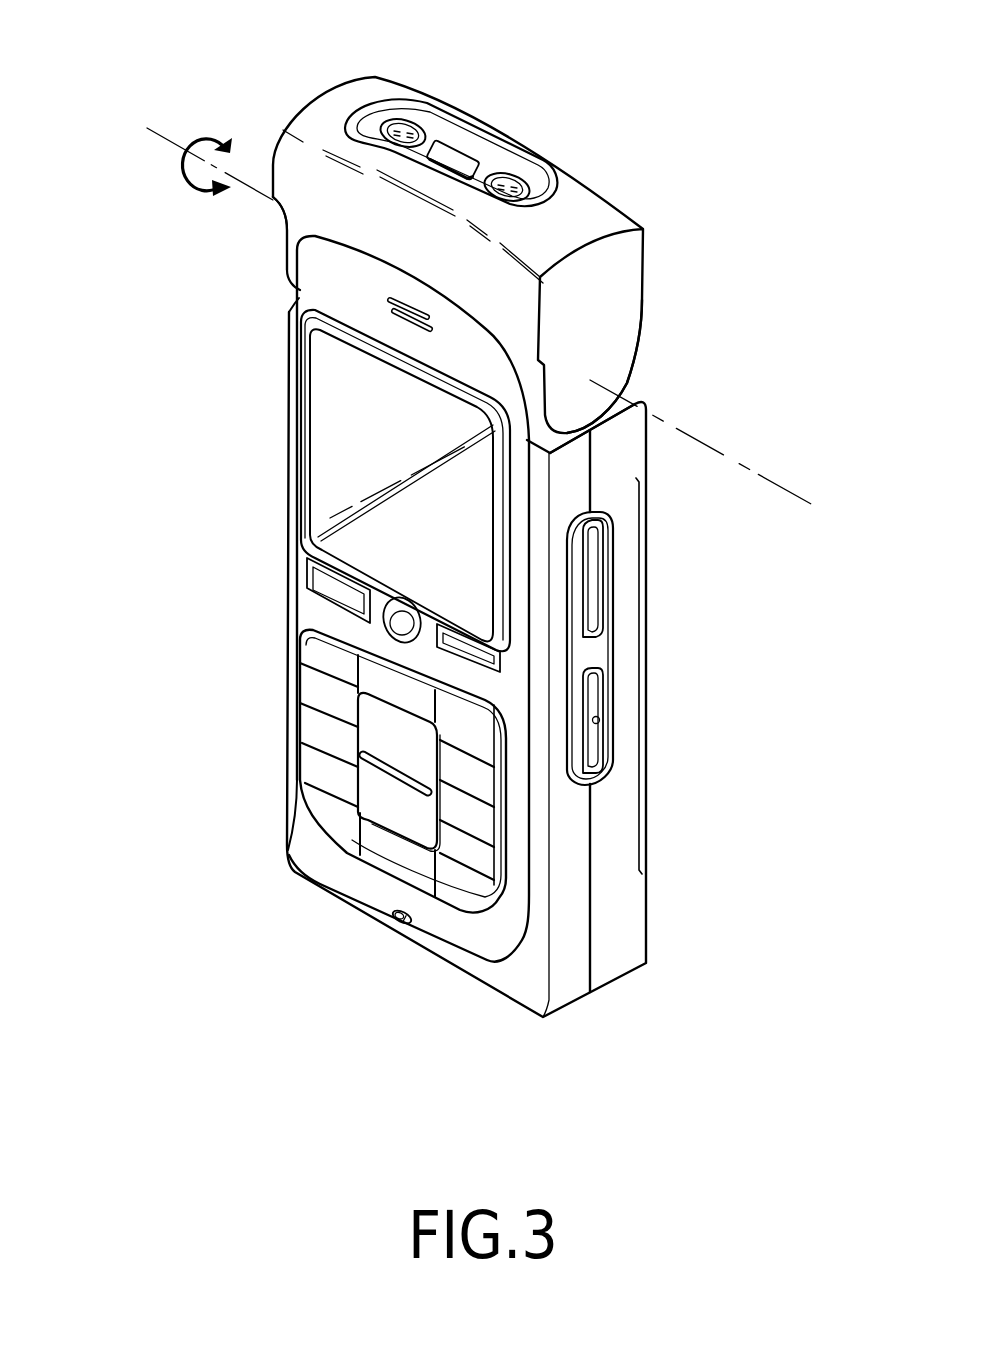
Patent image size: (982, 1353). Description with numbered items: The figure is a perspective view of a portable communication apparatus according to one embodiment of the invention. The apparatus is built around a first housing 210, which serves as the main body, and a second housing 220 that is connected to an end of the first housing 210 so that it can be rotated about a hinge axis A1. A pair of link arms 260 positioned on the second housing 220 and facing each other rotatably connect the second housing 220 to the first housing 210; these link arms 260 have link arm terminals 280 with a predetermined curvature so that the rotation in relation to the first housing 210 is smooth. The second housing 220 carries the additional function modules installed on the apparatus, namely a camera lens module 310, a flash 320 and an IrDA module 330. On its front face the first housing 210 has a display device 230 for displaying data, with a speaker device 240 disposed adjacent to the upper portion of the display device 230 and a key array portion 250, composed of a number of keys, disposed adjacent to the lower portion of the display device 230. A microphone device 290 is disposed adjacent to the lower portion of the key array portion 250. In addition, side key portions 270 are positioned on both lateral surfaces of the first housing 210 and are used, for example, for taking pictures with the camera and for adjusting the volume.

The first housing 210 is at (258, 560).
The second housing 220 is at (655, 213).
The display device 230 is at (337, 433).
The speaker device 240 is at (307, 293).
The key array portion 250 is at (372, 738).
The link arms 260 is at (293, 240).
The side key portions 270 is at (597, 650).
The link arm terminals 280 is at (597, 412).
The microphone device 290 is at (391, 912).
The camera lens module 310 is at (407, 127).
The flash 320 is at (517, 182).
The IrDA module 330 is at (457, 160).
The hinge axis A1 is at (175, 145).